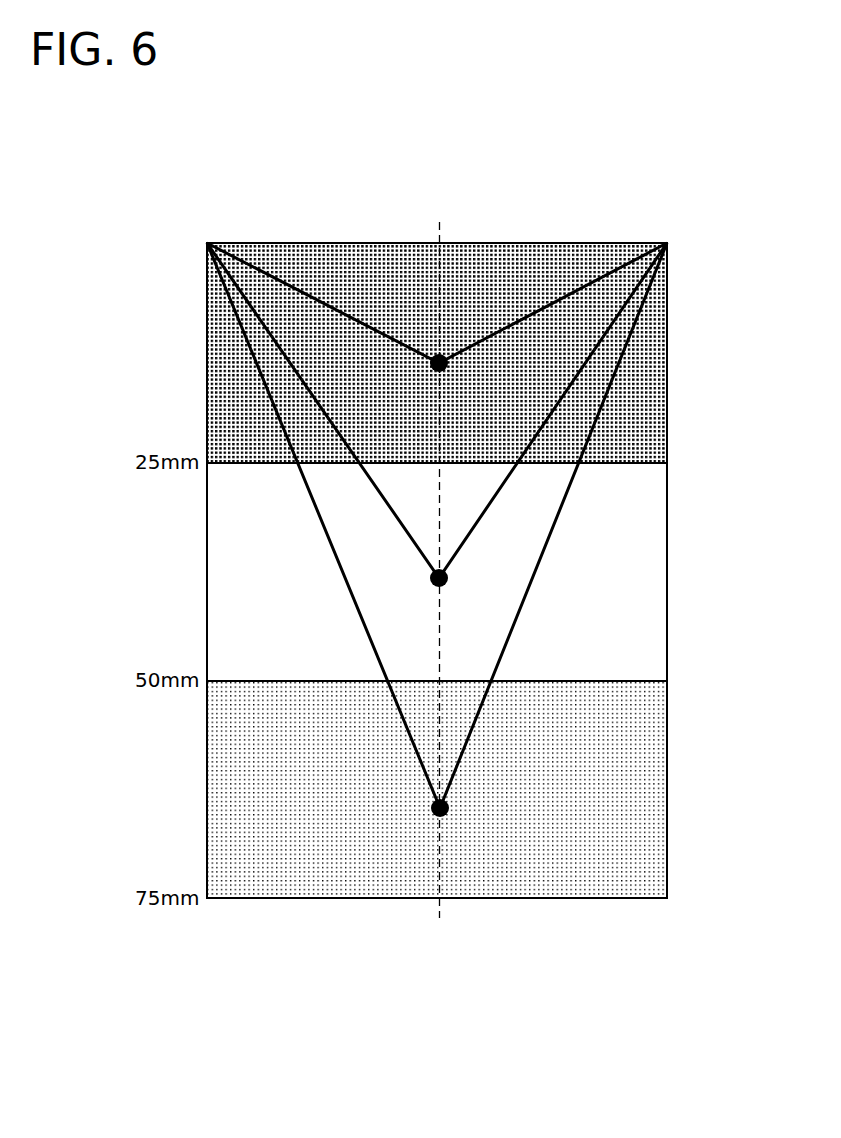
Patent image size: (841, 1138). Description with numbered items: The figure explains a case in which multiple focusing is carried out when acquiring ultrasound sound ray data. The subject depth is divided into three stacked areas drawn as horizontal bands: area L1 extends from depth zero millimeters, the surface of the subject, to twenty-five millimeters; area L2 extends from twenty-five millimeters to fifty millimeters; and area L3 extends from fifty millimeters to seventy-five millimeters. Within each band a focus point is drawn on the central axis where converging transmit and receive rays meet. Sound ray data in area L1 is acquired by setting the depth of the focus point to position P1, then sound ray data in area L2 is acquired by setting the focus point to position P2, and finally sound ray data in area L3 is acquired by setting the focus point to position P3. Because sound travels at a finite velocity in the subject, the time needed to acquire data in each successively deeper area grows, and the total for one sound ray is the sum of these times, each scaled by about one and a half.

The focus point position P1 is at (441, 355).
The focus point position P2 is at (449, 578).
The focus point position P3 is at (443, 815).
The area L1 is at (198, 244).
The area L2 is at (198, 473).
The area L3 is at (198, 689).